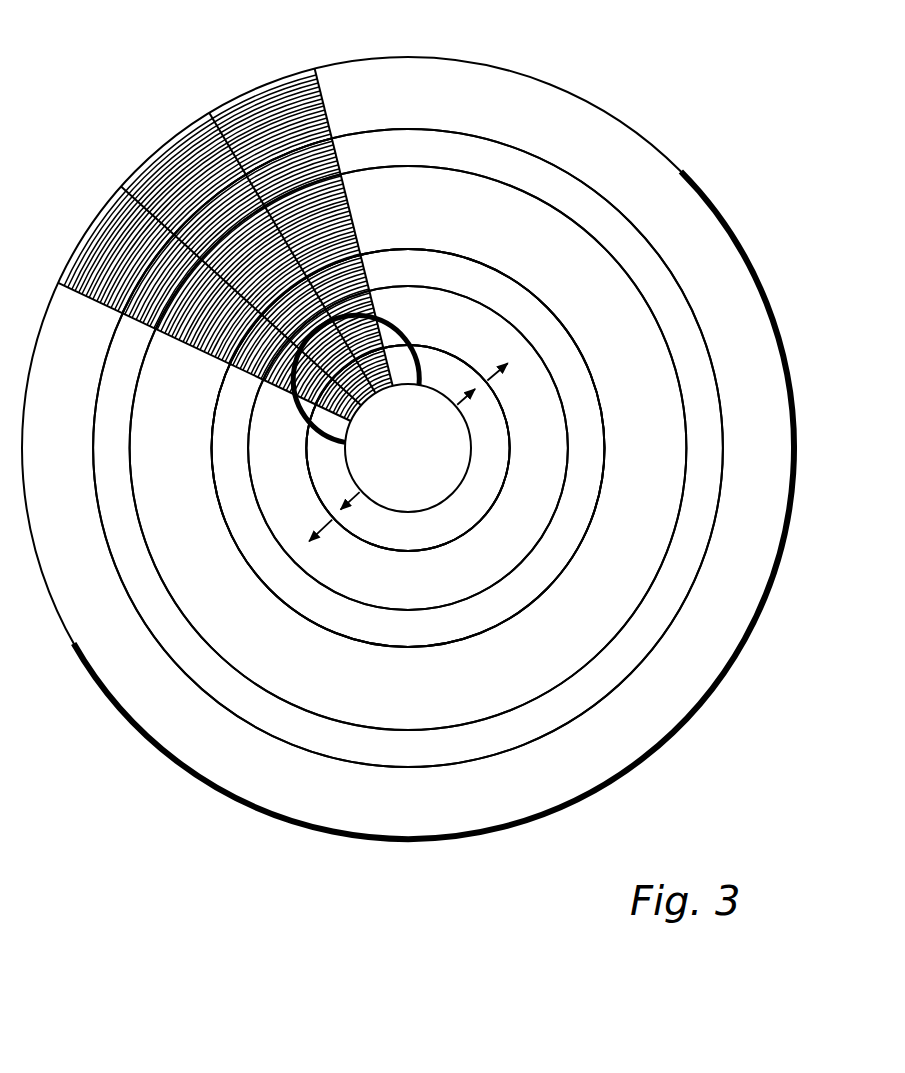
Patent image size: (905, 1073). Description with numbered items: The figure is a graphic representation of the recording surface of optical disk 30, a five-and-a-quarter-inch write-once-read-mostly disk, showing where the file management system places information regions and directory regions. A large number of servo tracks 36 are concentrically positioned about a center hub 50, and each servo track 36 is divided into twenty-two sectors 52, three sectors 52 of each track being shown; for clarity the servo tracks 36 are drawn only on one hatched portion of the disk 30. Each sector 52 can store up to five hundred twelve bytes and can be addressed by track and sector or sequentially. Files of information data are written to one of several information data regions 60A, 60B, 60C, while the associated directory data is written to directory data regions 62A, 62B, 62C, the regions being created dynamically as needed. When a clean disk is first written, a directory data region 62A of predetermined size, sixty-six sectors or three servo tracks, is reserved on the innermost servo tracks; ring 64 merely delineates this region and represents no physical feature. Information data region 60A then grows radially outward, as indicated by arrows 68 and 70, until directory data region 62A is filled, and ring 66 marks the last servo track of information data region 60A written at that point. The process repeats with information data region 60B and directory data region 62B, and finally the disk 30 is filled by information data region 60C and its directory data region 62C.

The optical disk 30 is at (690, 157).
The servo tracks 36 is at (168, 318).
The center hub 50 is at (392, 440).
The sectors 52 is at (312, 60).
The information data region 60A is at (453, 331).
The information data region 60B is at (462, 223).
The information data region 60C is at (462, 107).
The directory data region 62A is at (453, 378).
The directory data region 62B is at (455, 281).
The directory data region 62C is at (462, 164).
The ring 64 is at (509, 462).
The ring 66 is at (588, 529).
The arrow 68 is at (488, 381).
The arrow 70 is at (458, 406).